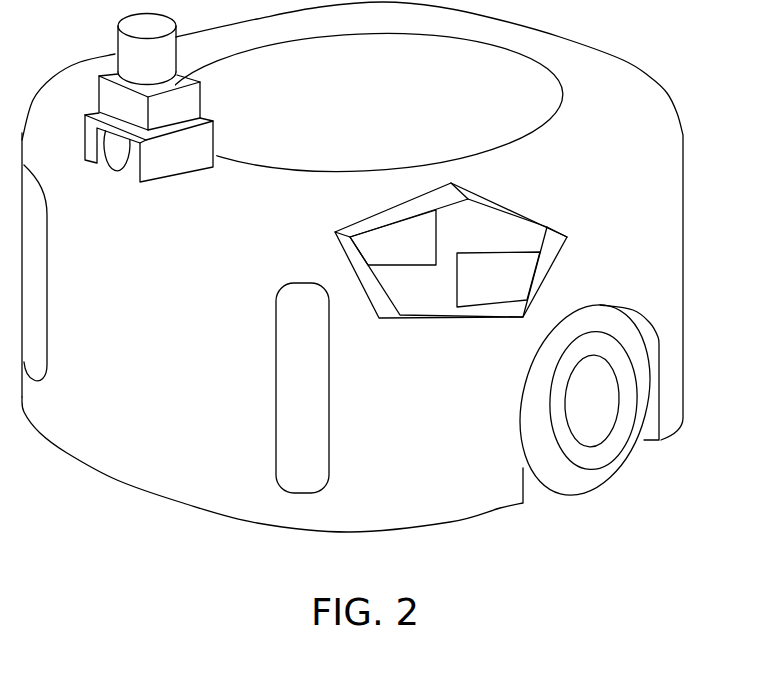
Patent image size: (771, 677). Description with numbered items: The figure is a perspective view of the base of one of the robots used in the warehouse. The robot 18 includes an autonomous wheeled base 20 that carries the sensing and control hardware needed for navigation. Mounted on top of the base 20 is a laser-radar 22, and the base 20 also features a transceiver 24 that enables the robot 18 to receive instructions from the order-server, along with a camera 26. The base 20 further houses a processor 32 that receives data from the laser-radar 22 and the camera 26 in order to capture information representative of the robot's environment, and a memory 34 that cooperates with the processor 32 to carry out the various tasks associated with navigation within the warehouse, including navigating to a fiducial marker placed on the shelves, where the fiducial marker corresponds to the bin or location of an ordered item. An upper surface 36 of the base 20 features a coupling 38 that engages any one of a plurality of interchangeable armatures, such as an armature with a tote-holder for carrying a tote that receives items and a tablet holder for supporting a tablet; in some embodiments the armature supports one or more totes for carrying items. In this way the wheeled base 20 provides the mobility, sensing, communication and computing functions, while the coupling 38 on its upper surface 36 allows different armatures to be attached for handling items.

The robot 18 is at (683, 138).
The autonomous wheeled base 20 is at (158, 333).
The laser-radar 22 is at (133, 74).
The transceiver 24 is at (112, 113).
The camera 26 is at (84, 150).
The processor 32 is at (483, 290).
The memory 34 is at (378, 253).
The upper surface 36 is at (317, 128).
The coupling 38 is at (481, 149).